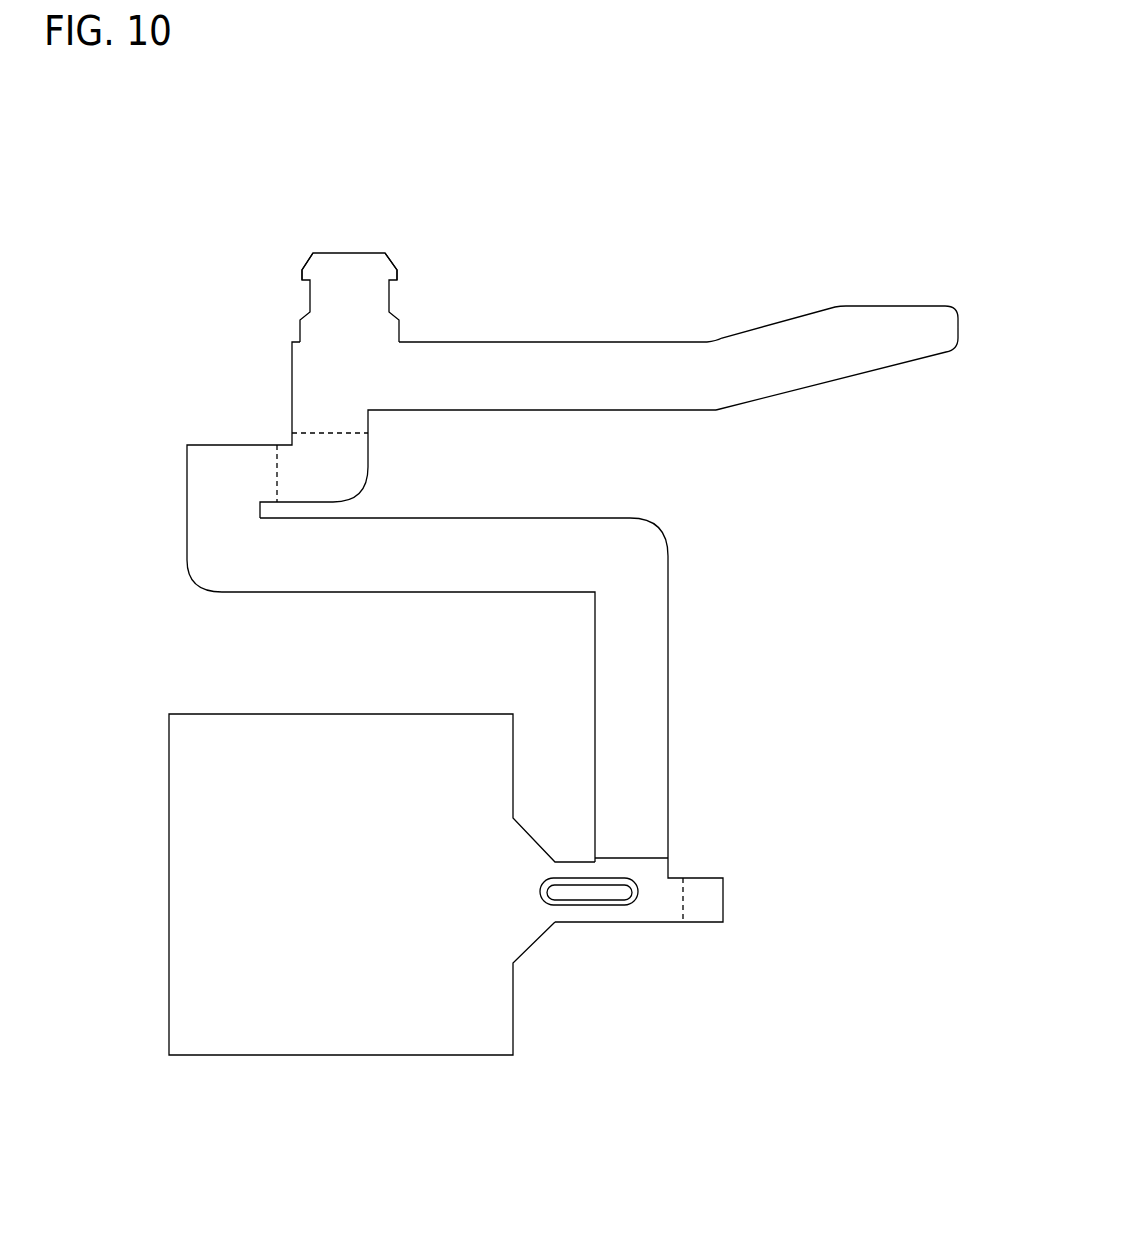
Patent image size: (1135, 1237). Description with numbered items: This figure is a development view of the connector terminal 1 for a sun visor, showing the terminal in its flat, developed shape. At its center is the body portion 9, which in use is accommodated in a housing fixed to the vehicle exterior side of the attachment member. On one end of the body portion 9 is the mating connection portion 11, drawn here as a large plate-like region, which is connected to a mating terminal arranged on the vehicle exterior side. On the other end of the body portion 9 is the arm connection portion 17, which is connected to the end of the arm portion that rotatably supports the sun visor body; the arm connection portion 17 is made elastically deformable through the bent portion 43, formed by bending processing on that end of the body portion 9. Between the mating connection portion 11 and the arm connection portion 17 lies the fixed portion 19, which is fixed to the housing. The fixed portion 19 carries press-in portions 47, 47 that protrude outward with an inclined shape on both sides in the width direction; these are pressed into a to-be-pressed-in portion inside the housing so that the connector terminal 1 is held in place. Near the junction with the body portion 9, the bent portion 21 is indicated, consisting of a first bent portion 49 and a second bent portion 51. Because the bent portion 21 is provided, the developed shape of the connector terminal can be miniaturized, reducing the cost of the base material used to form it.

The connector terminal for a sun visor 1 is at (495, 180).
The body portion 9 is at (671, 586).
The mating connection portion 11 is at (167, 880).
The arm connection portion 17 is at (801, 310).
The fixed portion 19 is at (345, 252).
The bent portion 21 is at (243, 405).
The bent portion 43 is at (600, 410).
The press-in portion 47 is at (300, 270).
The first bent portion 49 is at (275, 475).
The second bent portion 51 is at (320, 432).